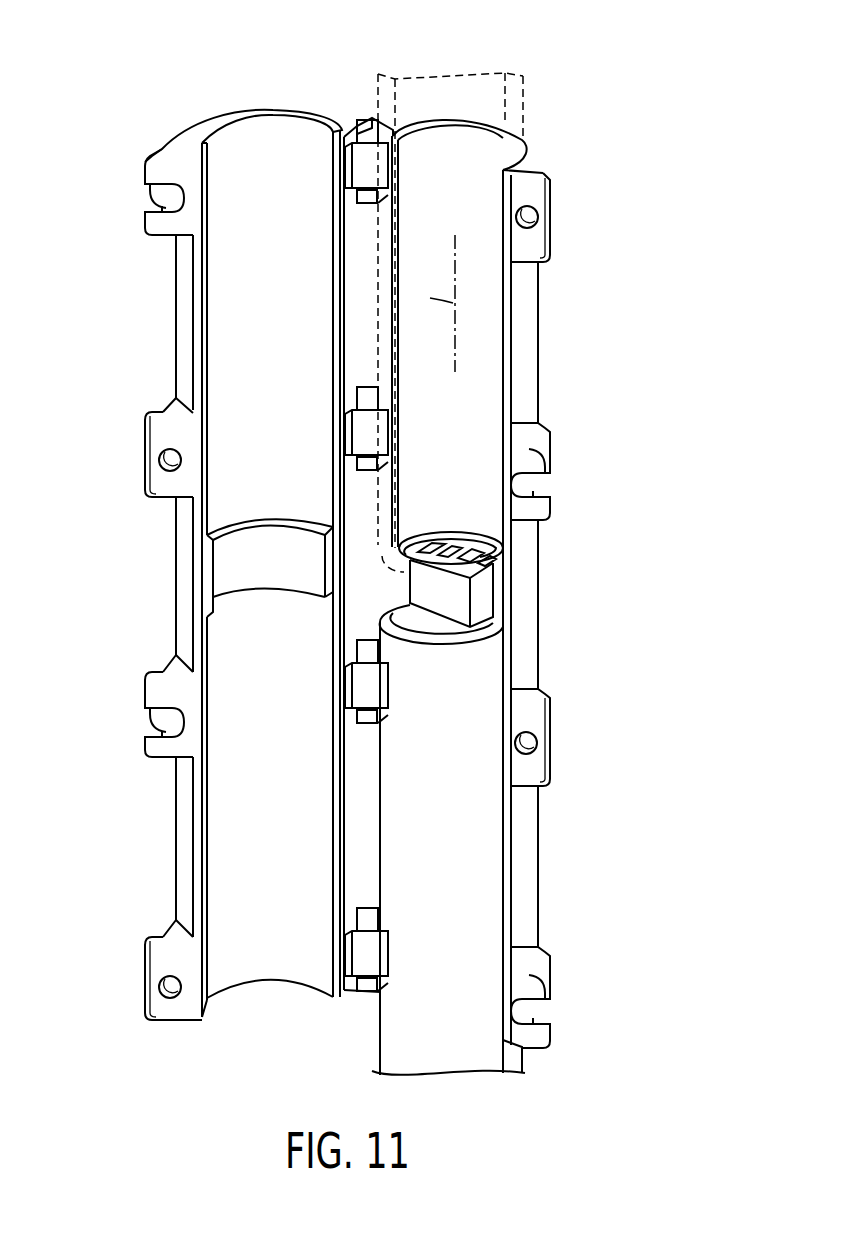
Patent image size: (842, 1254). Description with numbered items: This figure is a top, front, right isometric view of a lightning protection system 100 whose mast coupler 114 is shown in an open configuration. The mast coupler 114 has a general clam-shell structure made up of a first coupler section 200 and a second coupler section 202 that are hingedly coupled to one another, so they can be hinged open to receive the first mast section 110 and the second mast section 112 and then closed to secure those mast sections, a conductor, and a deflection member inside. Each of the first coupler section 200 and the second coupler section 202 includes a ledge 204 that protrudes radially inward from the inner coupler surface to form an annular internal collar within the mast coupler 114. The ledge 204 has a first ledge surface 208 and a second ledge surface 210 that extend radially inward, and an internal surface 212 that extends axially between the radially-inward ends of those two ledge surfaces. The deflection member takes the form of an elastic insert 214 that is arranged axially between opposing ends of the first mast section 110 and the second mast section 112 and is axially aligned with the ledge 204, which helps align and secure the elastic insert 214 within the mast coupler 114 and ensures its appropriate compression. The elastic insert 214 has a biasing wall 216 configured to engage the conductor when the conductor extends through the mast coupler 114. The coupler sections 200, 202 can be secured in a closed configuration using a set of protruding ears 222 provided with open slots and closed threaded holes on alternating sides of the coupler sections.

The lightning protection system 100 is at (463, 41).
The first mast section 110 is at (523, 109).
The second mast section 112 is at (414, 1021).
The mast coupler 114 is at (312, 79).
The first coupler section 200 is at (176, 306).
The second coupler section 202 is at (541, 312).
The ledge 204 is at (206, 540).
The first ledge surface 208 is at (231, 524).
The second ledge surface 210 is at (209, 613).
The internal surface 212 is at (302, 540).
The elastic insert 214 is at (449, 607).
The biasing wall 216 is at (470, 562).
The protruding ears 222 is at (160, 752).